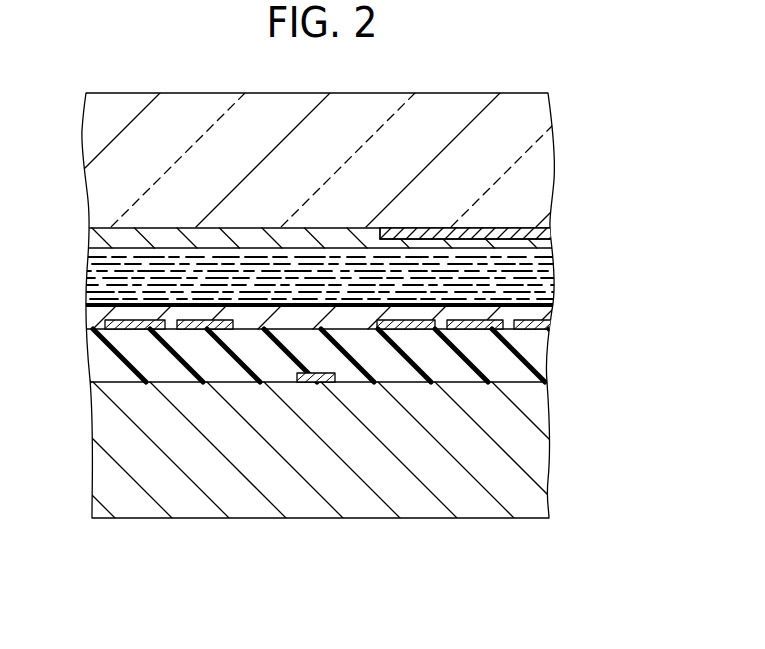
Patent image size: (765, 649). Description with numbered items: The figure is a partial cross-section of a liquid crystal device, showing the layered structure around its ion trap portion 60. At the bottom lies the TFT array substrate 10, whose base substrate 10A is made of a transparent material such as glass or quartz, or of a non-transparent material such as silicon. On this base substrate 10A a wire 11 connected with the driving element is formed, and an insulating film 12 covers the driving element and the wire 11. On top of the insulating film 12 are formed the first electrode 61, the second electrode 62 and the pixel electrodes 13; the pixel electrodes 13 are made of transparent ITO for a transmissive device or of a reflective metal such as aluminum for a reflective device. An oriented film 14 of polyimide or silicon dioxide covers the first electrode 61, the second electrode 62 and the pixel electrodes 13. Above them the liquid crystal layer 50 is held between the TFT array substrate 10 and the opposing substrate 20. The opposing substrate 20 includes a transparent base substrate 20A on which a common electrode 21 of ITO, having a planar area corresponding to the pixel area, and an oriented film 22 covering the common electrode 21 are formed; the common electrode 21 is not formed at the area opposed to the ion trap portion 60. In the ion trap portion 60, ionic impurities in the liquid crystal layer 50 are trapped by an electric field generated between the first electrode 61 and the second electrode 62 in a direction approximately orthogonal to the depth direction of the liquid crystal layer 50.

The TFT array substrate 10 is at (73, 305).
The base substrate 10A is at (480, 460).
The wire 11 is at (310, 383).
The insulating film 12 is at (543, 350).
The pixel electrode 13 is at (546, 324).
The oriented film 14 is at (548, 306).
The opposing substrate 20 is at (73, 92).
The base substrate 20A is at (540, 164).
The common electrode 21 is at (548, 233).
The oriented film 22 is at (540, 242).
The liquid crystal layer 50 is at (73, 247).
The ion trap portion 60 is at (169, 464).
The first electrode 61 is at (135, 329).
The second electrode 62 is at (195, 329).